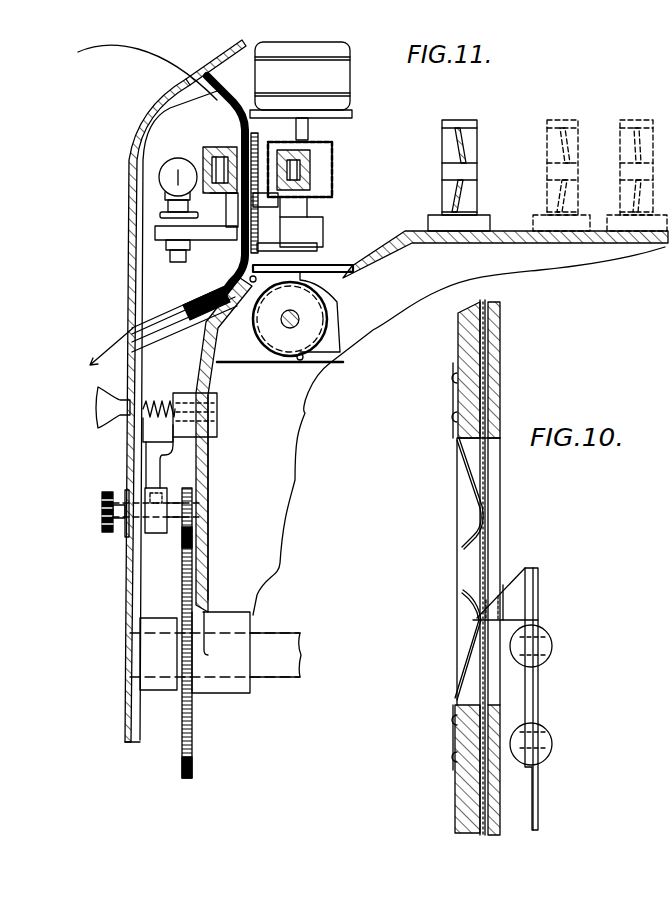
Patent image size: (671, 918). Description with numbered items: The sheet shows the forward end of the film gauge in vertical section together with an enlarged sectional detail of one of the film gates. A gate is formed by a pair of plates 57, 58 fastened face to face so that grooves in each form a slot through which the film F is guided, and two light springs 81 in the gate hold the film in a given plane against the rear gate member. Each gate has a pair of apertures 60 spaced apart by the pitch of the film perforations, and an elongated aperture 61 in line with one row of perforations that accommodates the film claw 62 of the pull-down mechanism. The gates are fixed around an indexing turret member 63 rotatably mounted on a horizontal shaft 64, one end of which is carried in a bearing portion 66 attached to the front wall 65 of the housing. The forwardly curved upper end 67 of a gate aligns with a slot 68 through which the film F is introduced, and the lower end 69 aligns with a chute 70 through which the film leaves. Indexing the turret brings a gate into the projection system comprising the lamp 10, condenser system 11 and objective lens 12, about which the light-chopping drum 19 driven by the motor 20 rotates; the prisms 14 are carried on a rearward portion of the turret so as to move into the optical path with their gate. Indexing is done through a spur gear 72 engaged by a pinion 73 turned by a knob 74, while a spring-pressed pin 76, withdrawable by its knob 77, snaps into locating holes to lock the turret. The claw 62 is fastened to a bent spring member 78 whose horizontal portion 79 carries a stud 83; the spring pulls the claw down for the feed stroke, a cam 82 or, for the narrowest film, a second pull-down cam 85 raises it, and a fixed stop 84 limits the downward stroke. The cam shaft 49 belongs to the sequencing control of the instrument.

In FIG. 11, the lamp 10 is at (179, 166).
In FIG. 11, the condenser system 11 is at (224, 150).
In FIG. 11, the objective lens 12 is at (315, 190).
In FIG. 11, the prism 14 is at (445, 135).
In FIG. 11, the light-chopping drum 19 is at (332, 150).
In FIG. 11, the motor 20 is at (338, 85).
In FIG. 11, the cam shaft 49 is at (291, 330).
In FIG. 10, the plate 57 is at (503, 362).
In FIG. 10, the plate 58 is at (460, 345).
In FIG. 11, the apertures 60 is at (258, 155).
In FIG. 10, the elongated aperture 61 is at (500, 540).
In FIG. 11, the film claw 62 is at (257, 197).
In FIG. 10, the film claw 62 is at (478, 620).
In FIG. 11, the indexing turret member 63 is at (210, 462).
In FIG. 11, the horizontal shaft 64 is at (286, 636).
In FIG. 11, the front wall 65 is at (125, 607).
In FIG. 11, the bearing portion 66 is at (160, 698).
In FIG. 11, the upper end 67 is at (218, 98).
In FIG. 11, the slot 68 is at (187, 77).
In FIG. 11, the lower end 69 is at (239, 266).
In FIG. 11, the chute 70 is at (168, 320).
In FIG. 11, the spur gear 72 is at (194, 744).
In FIG. 11, the pinion 73 is at (185, 538).
In FIG. 11, the knob 74 is at (102, 520).
In FIG. 11, the spring-pressed pin 76 is at (160, 404).
In FIG. 11, the knob 77 is at (100, 424).
In FIG. 11, the bent spring member 78 is at (352, 264).
In FIG. 10, the bent spring member 78 is at (540, 795).
In FIG. 11, the horizontal portion 79 is at (327, 272).
In FIG. 10, the light springs 81 is at (468, 490).
In FIG. 11, the cam 82 is at (275, 348).
In FIG. 11, the stud 83 is at (328, 285).
In FIG. 11, the fixed stop 84 is at (225, 316).
In FIG. 11, the second pull-down cam 85 is at (300, 360).
In FIG. 11, the film F is at (113, 52).
In FIG. 10, the film F is at (488, 468).